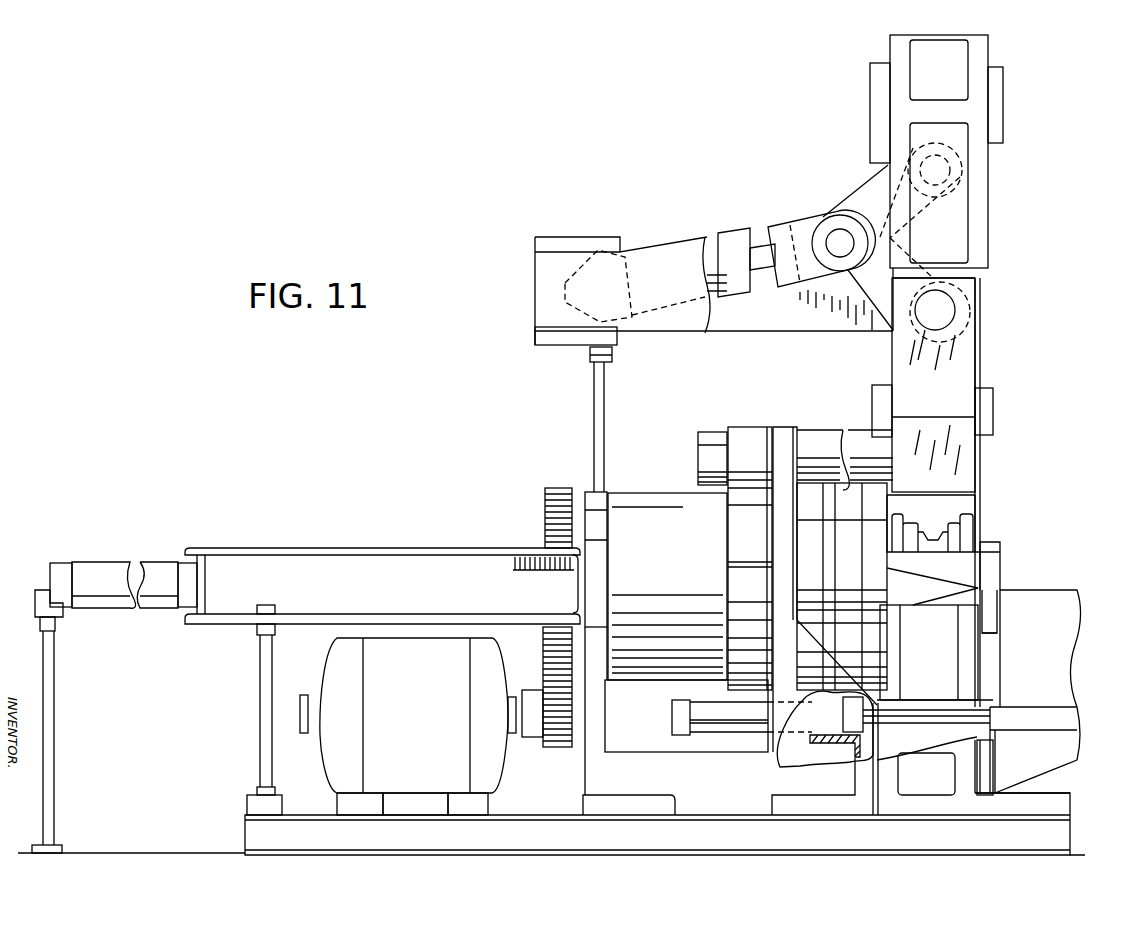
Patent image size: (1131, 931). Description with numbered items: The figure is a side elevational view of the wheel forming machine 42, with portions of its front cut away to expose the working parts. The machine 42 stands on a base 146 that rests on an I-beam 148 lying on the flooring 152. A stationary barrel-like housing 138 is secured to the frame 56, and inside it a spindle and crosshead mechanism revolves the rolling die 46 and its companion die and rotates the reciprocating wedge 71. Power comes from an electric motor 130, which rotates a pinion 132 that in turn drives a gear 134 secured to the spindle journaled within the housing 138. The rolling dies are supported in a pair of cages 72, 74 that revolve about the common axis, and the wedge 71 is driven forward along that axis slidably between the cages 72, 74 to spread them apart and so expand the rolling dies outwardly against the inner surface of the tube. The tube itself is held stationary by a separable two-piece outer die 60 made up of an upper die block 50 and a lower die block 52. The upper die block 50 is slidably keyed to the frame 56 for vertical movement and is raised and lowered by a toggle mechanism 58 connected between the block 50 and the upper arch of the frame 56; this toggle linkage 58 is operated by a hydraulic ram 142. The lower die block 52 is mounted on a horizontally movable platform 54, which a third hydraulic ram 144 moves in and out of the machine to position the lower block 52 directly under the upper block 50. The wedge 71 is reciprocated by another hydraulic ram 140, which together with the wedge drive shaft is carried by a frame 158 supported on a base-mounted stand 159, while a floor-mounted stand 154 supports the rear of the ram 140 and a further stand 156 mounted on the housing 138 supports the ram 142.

The wheel forming machine 42 is at (762, 140).
The rolling die 46 is at (968, 520).
The upper die block 50 is at (982, 487).
The lower die block 52 is at (1047, 594).
The platform 54 is at (1043, 720).
The frame 56 is at (988, 248).
The toggle mechanism 58 is at (859, 177).
The outer die 60 is at (975, 470).
The wedge 71 is at (890, 578).
The cage 72 is at (1006, 534).
The cage 74 is at (999, 646).
The electric motor 130 is at (325, 663).
The pinion 132 is at (553, 747).
The gear 134 is at (550, 512).
The barrel-like housing 138 is at (652, 493).
The hydraulic ram 140 is at (112, 565).
The hydraulic ram 142 is at (706, 238).
The hydraulic ram 144 is at (812, 712).
The base 146 is at (1020, 800).
The I-beam 148 is at (736, 796).
The flooring 152 is at (105, 853).
The floor-mounted stand 154 is at (54, 697).
The stand 156 is at (594, 390).
The frame 158 is at (400, 530).
The base-mounted stand 159 is at (265, 713).